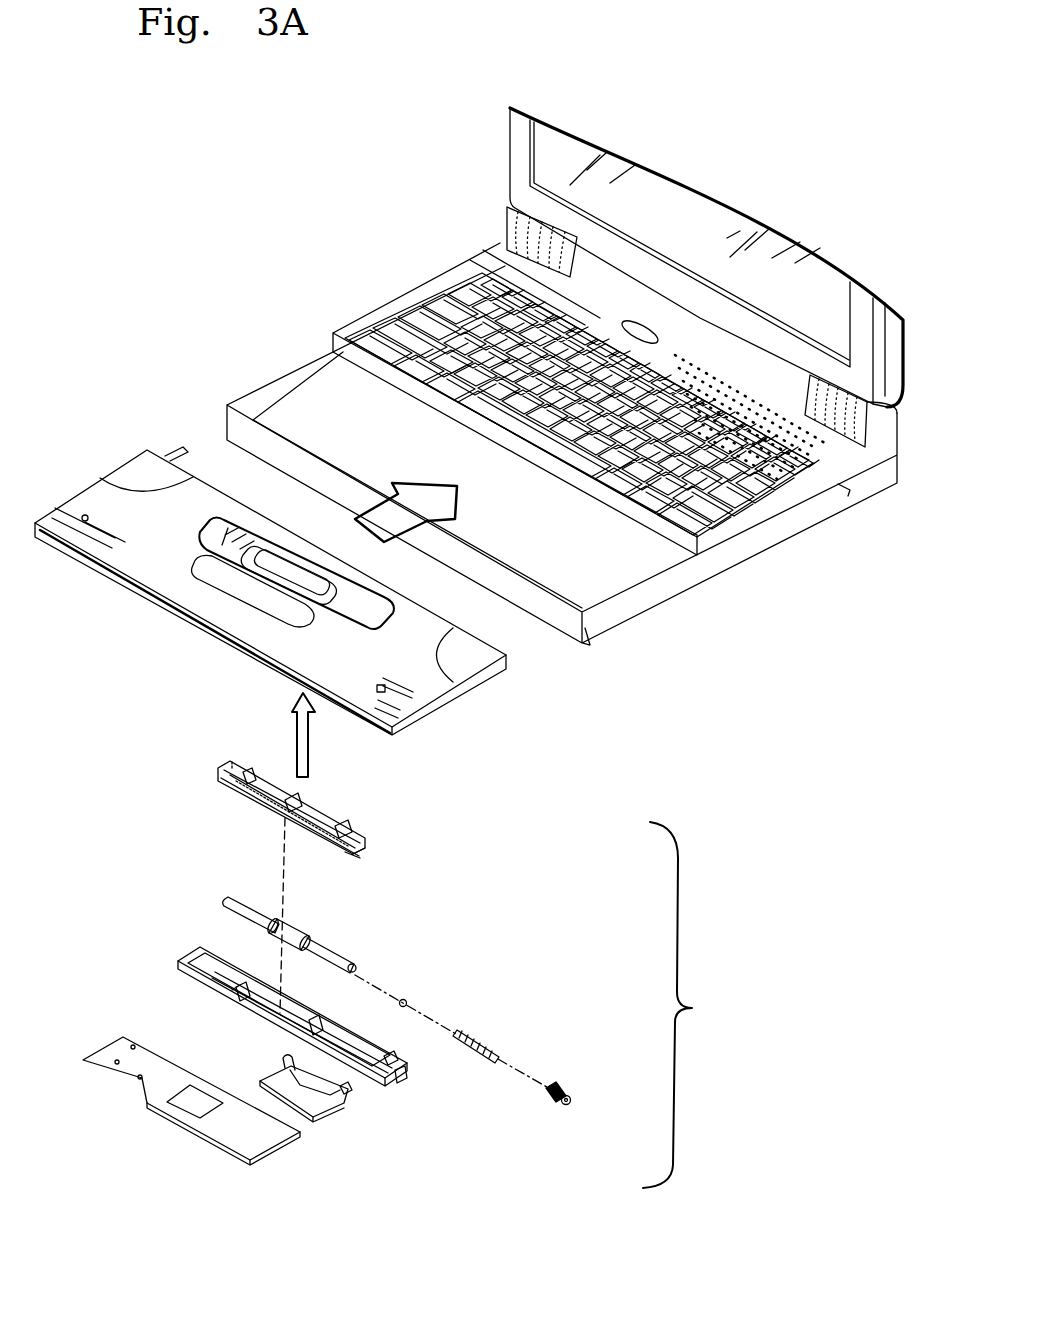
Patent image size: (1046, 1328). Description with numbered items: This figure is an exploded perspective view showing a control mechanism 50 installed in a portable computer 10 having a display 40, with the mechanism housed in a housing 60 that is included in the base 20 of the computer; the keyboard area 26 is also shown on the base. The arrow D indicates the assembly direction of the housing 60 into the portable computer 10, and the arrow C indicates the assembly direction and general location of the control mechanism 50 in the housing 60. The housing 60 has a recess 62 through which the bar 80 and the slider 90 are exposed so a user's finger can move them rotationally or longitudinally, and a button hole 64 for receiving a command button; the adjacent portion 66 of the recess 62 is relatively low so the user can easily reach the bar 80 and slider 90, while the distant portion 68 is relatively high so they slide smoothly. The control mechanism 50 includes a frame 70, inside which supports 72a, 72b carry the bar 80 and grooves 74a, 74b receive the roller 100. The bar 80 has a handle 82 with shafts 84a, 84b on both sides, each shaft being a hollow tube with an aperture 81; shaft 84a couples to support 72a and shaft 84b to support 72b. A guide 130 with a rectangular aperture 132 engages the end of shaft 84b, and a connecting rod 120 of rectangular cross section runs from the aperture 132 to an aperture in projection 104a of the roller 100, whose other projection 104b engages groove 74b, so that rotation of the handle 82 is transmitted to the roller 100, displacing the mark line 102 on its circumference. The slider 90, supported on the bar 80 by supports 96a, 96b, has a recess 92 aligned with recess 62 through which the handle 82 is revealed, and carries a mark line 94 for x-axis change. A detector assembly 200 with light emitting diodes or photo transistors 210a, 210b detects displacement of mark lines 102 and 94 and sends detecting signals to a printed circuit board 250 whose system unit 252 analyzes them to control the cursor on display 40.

The portable computer 10 is at (232, 164).
The base 20 is at (562, 426).
The keyboard 26 is at (735, 500).
The display 40 is at (690, 226).
The control mechanism 50 is at (402, 944).
The housing 60 is at (270, 575).
The recess 62 is at (290, 565).
The button aperture or hole 64 is at (225, 595).
The adjacent portion of the recess 66 is at (330, 578).
The distant portion of the recess 68 is at (373, 600).
The frame 70 is at (305, 997).
The support 72a is at (240, 992).
The support 72b is at (315, 1023).
The groove 74a is at (391, 1061).
The groove 74b is at (404, 1079).
The bar 80 is at (295, 907).
The aperture 81 is at (357, 971).
The handle 82 is at (288, 924).
The shaft 84a is at (256, 910).
The shaft 84b is at (327, 953).
The slider 90 is at (299, 797).
The recess 92 is at (292, 808).
The mark line or mark member 94 is at (345, 850).
The support 96a is at (249, 771).
The support 96b is at (344, 828).
The roller 100 is at (589, 1084).
The mark line or mark member 102 is at (568, 1092).
The projection 104a is at (552, 1087).
The projection 104b is at (573, 1104).
The connecting rod 120 is at (490, 1050).
The guide 130 is at (411, 1001).
The aperture 132 is at (410, 1003).
The detector or sense assembly 200 is at (310, 1092).
The light emitting diode or photo transistor 210a is at (349, 1096).
The light emitting diode or photo transistor 210b is at (281, 1057).
The printed circuit board 250 is at (202, 1110).
The system unit 252 is at (190, 1105).
The arrow C is at (310, 750).
The arrow D is at (457, 500).